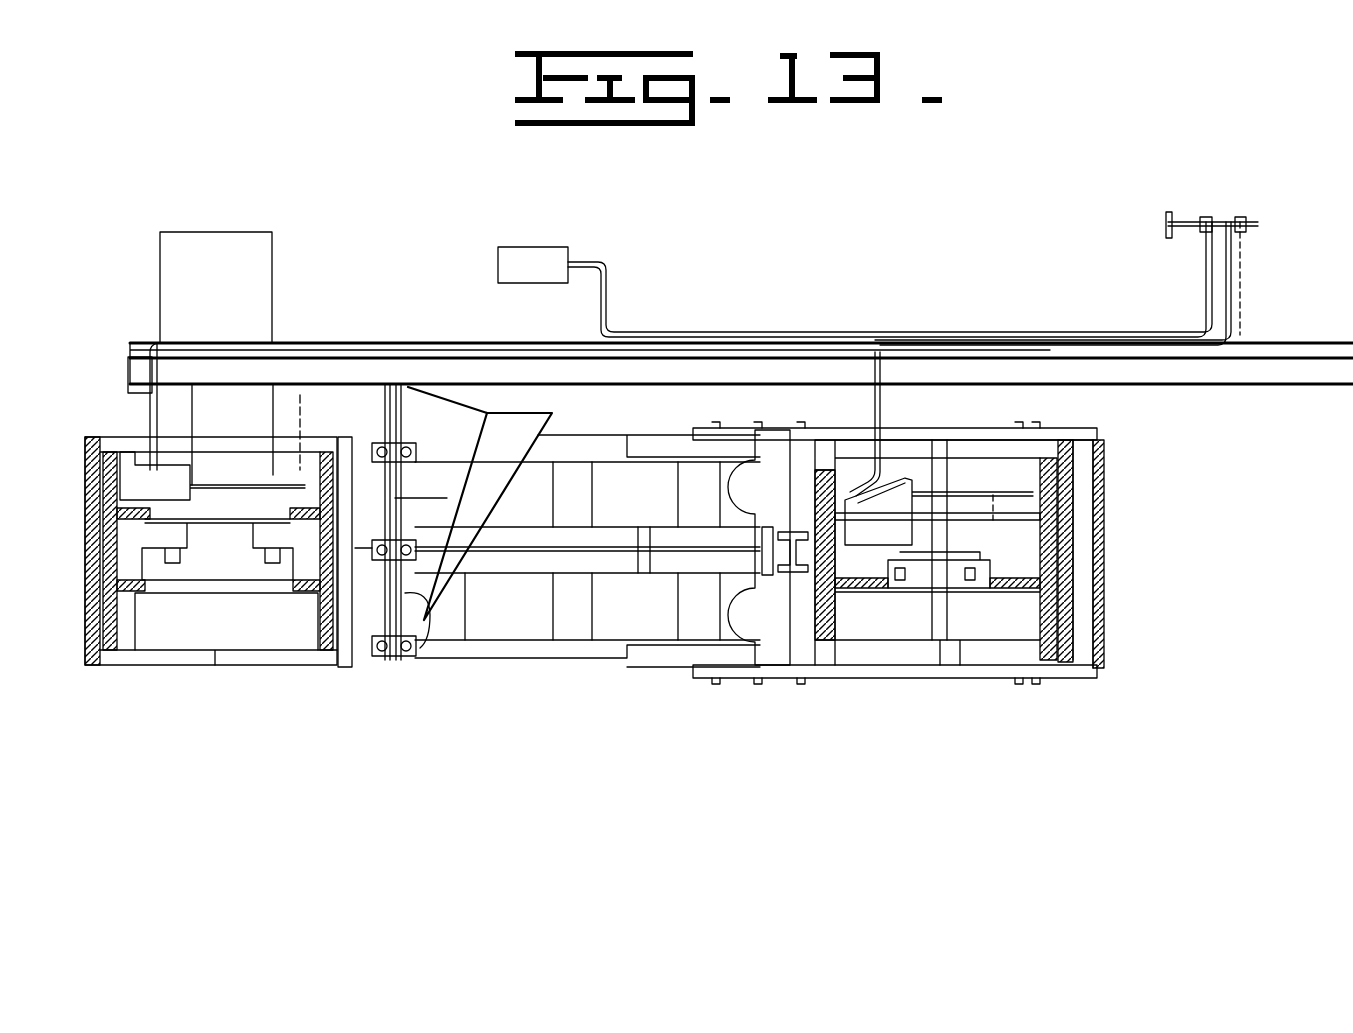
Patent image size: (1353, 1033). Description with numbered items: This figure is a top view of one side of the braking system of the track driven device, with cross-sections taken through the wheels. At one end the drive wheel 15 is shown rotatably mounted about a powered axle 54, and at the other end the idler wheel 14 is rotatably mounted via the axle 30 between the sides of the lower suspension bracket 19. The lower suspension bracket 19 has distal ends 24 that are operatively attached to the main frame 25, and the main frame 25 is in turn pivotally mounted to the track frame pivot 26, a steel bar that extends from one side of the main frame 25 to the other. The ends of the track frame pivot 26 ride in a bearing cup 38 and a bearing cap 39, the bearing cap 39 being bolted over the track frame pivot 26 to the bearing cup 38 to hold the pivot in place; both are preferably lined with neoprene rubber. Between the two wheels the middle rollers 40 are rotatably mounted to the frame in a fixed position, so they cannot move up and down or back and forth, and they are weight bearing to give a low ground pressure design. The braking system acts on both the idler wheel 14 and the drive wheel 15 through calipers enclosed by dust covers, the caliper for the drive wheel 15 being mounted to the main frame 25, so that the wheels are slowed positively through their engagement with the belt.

The idler wheel 14 is at (863, 696).
The drive wheel 15 is at (172, 675).
The lower suspension bracket 19 is at (1078, 405).
The distal ends 24 is at (732, 702).
The main frame 25 is at (527, 650).
The track frame pivot 26 is at (436, 628).
The axle 30 is at (943, 607).
The bearing cup 38 is at (422, 542).
The bearing cap 39 is at (369, 664).
The middle rollers 40 is at (527, 480).
The powered axle 54 is at (274, 252).